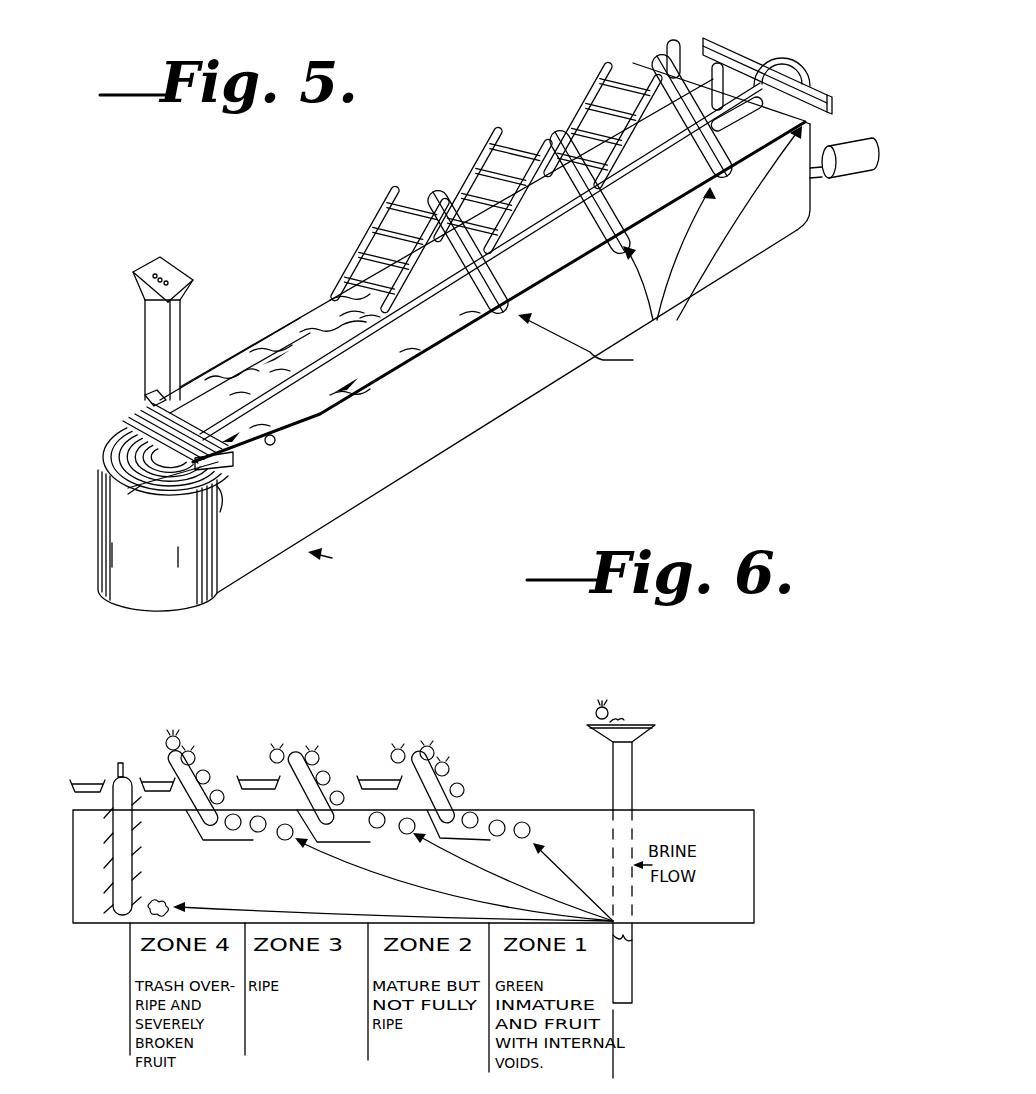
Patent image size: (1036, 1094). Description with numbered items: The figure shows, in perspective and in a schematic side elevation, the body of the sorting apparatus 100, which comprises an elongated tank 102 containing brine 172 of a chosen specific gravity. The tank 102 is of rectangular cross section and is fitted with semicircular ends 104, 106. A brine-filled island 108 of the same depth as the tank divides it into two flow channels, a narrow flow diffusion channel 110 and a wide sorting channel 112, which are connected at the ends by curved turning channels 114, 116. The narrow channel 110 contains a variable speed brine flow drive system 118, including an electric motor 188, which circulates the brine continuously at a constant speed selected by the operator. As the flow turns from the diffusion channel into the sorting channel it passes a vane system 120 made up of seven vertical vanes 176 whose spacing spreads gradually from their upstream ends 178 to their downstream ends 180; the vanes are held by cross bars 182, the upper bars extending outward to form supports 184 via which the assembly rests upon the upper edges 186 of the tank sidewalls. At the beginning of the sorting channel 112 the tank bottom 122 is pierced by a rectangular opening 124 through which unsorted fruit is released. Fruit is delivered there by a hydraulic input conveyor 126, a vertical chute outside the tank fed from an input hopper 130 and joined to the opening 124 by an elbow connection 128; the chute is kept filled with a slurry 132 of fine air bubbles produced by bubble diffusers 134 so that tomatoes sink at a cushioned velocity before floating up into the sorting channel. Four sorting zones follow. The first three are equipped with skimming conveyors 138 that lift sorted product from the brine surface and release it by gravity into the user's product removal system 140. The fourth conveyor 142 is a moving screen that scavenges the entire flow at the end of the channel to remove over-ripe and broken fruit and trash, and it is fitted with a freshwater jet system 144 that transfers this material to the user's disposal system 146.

In FIG. 5, the apparatus 100 is at (344, 564).
In FIG. 5, the tank 102 is at (392, 482).
In FIG. 5, the semicircular end 104 is at (100, 567).
In FIG. 5, the semicircular end 106 is at (797, 63).
In FIG. 5, the island 108 is at (236, 470).
In FIG. 5, the flow diffusion channel 110 is at (498, 408).
In FIG. 5, the sorting channel 112 is at (446, 237).
In FIG. 5, the curved turning channel 114 is at (104, 466).
In FIG. 5, the curved turning channel 116 is at (815, 80).
In FIG. 5, the brine flow drive system 118 is at (850, 200).
In FIG. 5, the vane system 120 is at (166, 494).
In FIG. 5, the tank bottom 122 is at (497, 426).
In FIG. 6, the tank bottom 122 is at (756, 927).
In FIG. 6, the rectangular opening 124 is at (634, 923).
In FIG. 5, the hydraulic input conveyor 126 is at (147, 352).
In FIG. 6, the hydraulic input conveyor 126 is at (648, 780).
In FIG. 6, the elbow connection 128 is at (634, 988).
In FIG. 5, the input hopper 130 is at (185, 272).
In FIG. 6, the input hopper 130 is at (658, 723).
In FIG. 5, the slurry 132 is at (160, 282).
In FIG. 5, the bubble diffusers 134 is at (145, 403).
In FIG. 5, the skimming conveyors 138 is at (352, 258).
In FIG. 6, the skimming conveyors 138 is at (468, 755).
In FIG. 5, the product removal system 140 is at (505, 318).
In FIG. 6, the product removal system 140 is at (152, 784).
In FIG. 5, the fourth conveyor 142 is at (705, 45).
In FIG. 6, the fourth conveyor 142 is at (133, 862).
In FIG. 6, the freshwater jet system 144 is at (120, 763).
In FIG. 6, the disposal system 146 is at (80, 784).
In FIG. 5, the brine 172 is at (308, 330).
In FIG. 5, the vertical vanes 176 is at (138, 494).
In FIG. 5, the upstream ends 178 is at (244, 511).
In FIG. 5, the downstream ends 180 is at (235, 365).
In FIG. 5, the cross bars 182 is at (115, 440).
In FIG. 5, the supports 184 is at (228, 497).
In FIG. 5, the upper edges 186 is at (275, 444).
In FIG. 5, the electric motor 188 is at (858, 142).